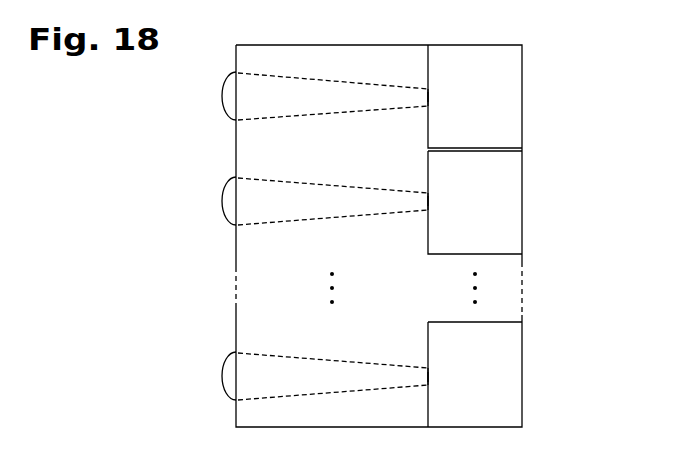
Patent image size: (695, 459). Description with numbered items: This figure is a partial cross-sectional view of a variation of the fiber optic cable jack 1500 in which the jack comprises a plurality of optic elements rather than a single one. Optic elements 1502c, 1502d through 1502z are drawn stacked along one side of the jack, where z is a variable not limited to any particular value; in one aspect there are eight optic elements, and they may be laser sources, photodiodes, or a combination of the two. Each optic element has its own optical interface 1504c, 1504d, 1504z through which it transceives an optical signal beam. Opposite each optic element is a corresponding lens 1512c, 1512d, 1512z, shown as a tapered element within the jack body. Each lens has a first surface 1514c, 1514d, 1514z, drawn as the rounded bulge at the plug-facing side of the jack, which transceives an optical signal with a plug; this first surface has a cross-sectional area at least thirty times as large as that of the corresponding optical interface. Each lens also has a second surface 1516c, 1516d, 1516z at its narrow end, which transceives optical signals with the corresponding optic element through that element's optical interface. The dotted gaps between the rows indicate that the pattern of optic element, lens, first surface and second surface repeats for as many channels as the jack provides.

The fiber optic cable jack 1500 is at (600, 127).
The first surface 1514c is at (219, 96).
The first surface 1514d is at (219, 200).
The first surface 1514z is at (219, 377).
The lens 1512c is at (330, 107).
The lens 1512d is at (330, 211).
The lens 1512z is at (330, 386).
The second surface 1516c is at (425, 97).
The second surface 1516d is at (425, 202).
The second surface 1516z is at (425, 377).
The optic element 1502c is at (441, 76).
The optic element 1502d is at (441, 181).
The optic element 1502z is at (441, 354).
The optical interface 1504c is at (468, 112).
The optical interface 1504d is at (431, 202).
The optical interface 1504z is at (468, 393).